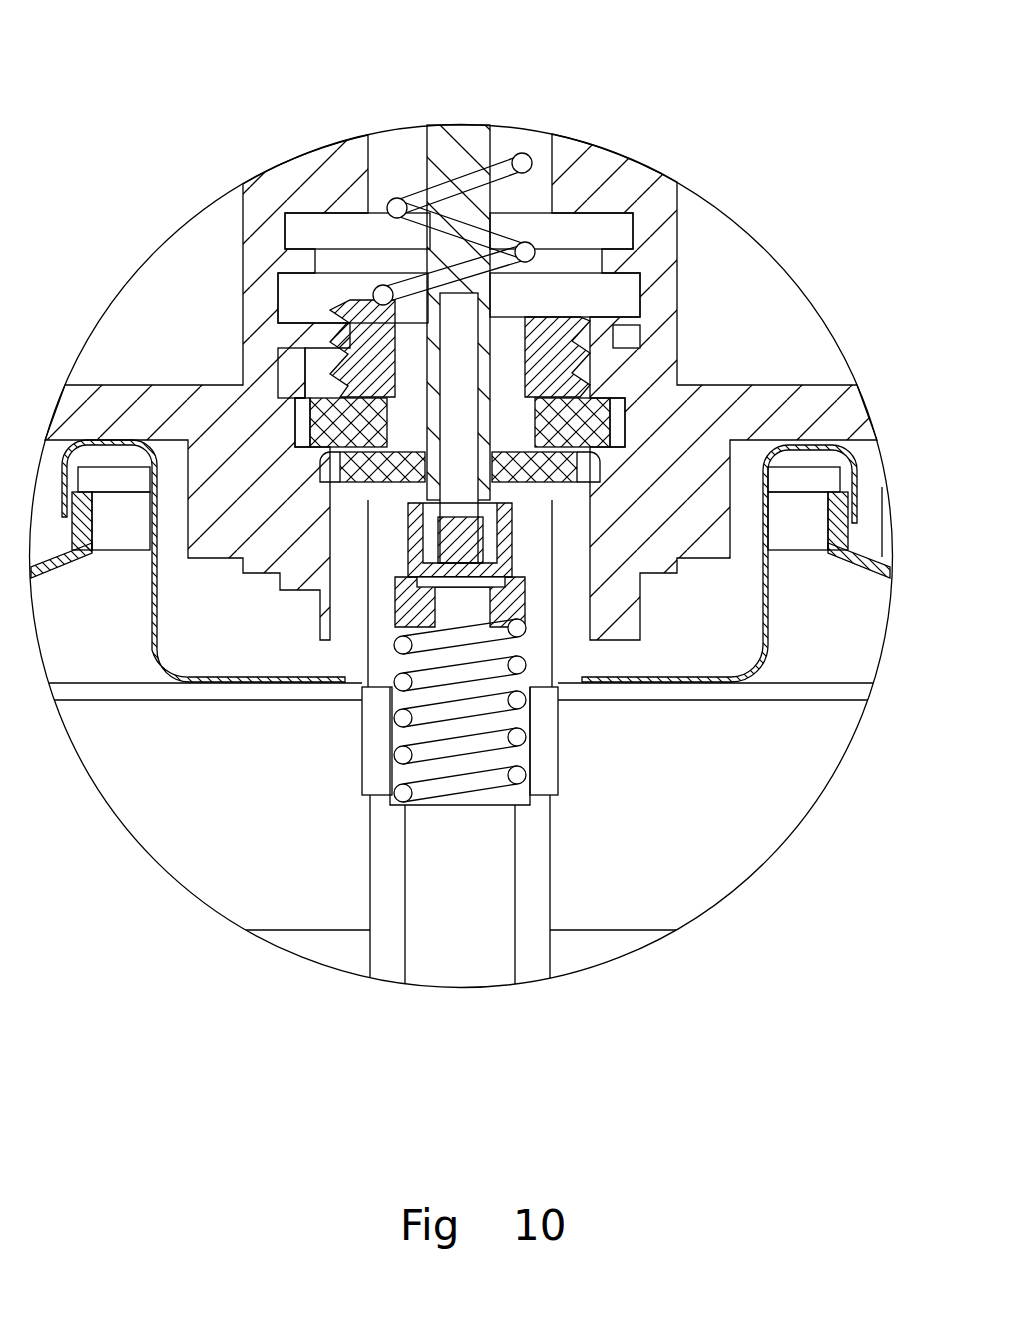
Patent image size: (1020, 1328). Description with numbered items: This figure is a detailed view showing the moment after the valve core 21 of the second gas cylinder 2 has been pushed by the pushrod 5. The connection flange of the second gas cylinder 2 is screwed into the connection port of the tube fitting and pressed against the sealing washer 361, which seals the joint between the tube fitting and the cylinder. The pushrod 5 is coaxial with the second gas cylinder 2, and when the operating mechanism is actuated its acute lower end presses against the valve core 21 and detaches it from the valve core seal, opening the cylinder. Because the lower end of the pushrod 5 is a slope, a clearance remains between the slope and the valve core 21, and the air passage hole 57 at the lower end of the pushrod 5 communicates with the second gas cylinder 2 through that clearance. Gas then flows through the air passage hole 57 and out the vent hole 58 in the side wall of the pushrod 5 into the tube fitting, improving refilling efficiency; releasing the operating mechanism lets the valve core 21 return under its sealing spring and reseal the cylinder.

The second gas cylinder 2 is at (52, 567).
The pushrod 5 is at (452, 243).
The valve core 21 is at (463, 560).
The air passage hole 57 is at (460, 438).
The vent hole 58 is at (455, 333).
The sealing washer 361 is at (588, 430).